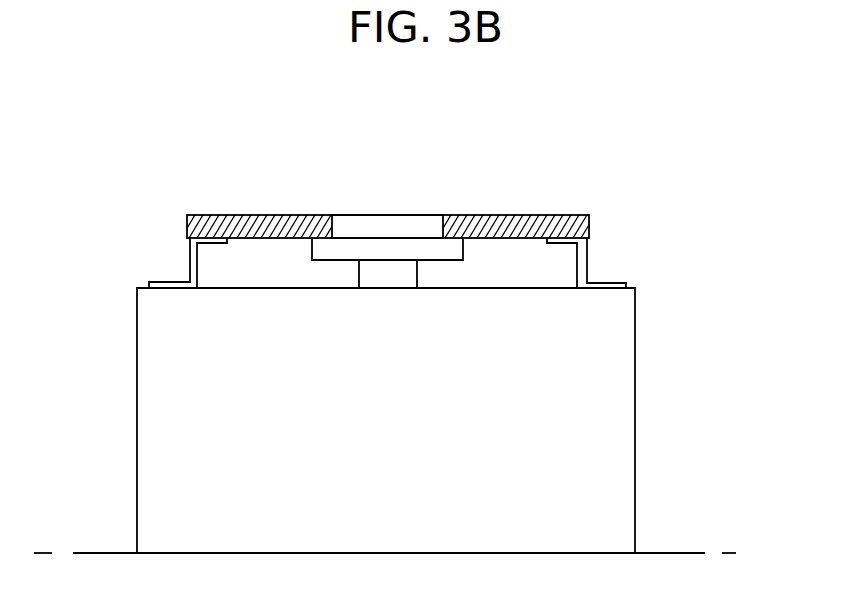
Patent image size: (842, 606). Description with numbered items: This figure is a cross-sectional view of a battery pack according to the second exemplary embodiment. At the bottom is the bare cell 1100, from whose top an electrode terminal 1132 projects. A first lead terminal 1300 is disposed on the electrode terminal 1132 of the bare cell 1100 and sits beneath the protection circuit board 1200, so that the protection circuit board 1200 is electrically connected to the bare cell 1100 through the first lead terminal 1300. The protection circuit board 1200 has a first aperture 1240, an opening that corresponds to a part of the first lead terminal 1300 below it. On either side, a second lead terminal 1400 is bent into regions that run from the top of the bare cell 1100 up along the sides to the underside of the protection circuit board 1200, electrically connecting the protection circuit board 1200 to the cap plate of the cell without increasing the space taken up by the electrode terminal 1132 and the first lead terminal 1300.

The bare cell 1100 is at (640, 422).
The electrode terminal 1132 is at (392, 282).
The protection circuit board 1200 is at (600, 215).
The first aperture 1240 is at (350, 215).
The first lead terminal 1300 is at (462, 267).
The second lead terminal 1400 is at (170, 272).